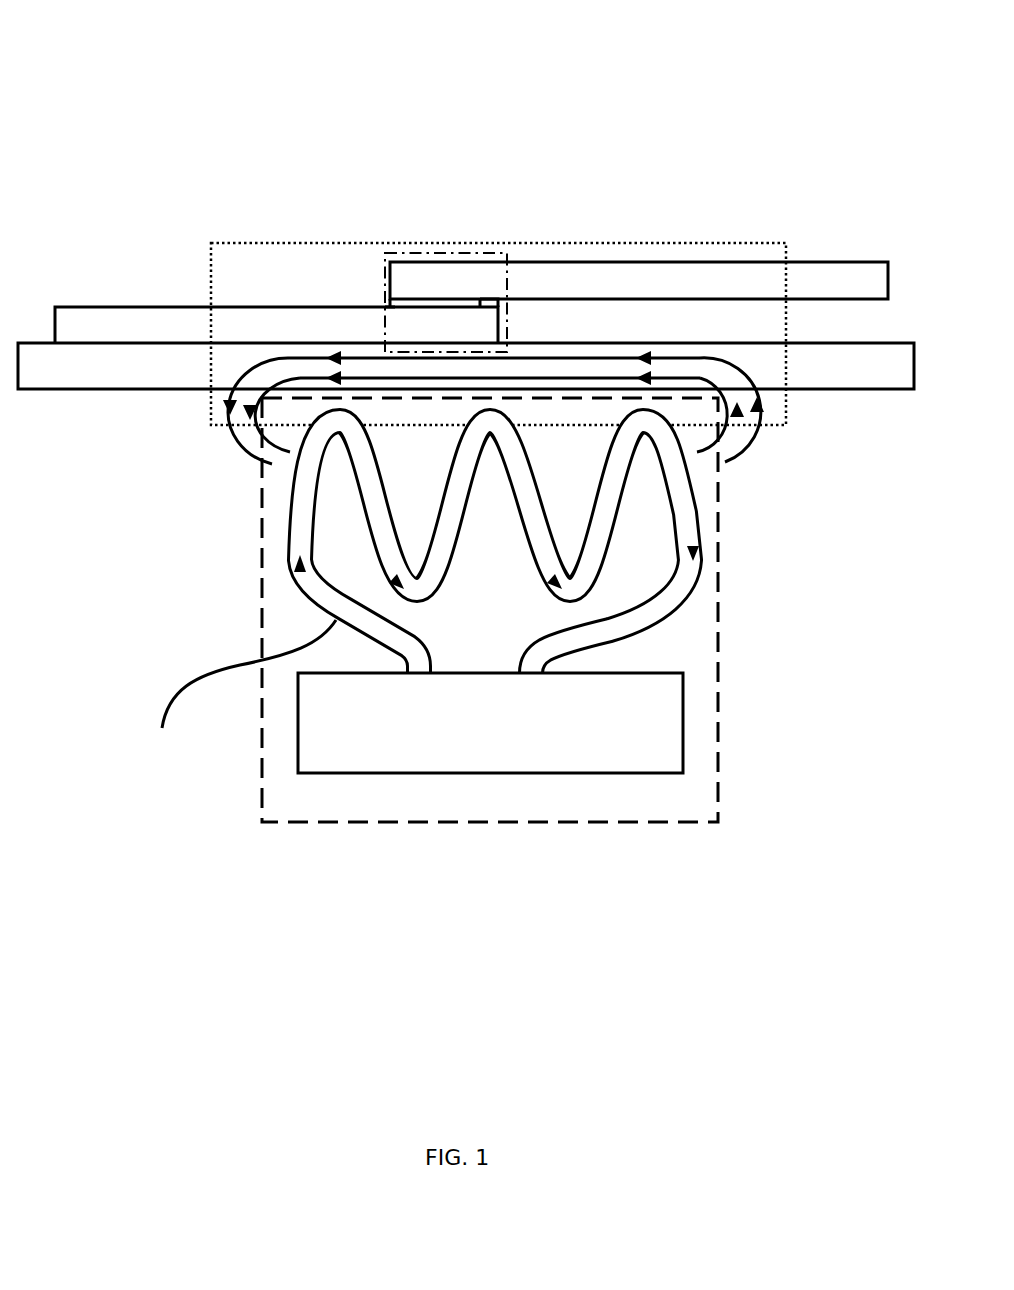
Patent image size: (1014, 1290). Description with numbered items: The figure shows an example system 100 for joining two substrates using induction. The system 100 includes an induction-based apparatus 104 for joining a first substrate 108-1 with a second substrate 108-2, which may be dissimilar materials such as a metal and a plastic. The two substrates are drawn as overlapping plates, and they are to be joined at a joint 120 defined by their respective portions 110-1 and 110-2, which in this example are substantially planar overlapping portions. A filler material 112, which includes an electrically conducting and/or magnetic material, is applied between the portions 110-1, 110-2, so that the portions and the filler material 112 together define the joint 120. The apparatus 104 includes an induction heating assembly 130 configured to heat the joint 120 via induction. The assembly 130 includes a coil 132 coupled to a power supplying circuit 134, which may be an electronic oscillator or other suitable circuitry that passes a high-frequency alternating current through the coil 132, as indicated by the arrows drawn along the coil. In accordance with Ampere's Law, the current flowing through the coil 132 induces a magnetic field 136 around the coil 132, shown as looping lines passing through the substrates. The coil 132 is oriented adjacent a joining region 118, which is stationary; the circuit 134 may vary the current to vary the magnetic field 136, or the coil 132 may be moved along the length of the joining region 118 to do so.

The system 100 is at (213, 96).
The induction-based apparatus 104 is at (160, 611).
The first substrate 108-1 is at (83, 307).
The second substrate 108-2 is at (794, 262).
The portion 110-1 is at (480, 303).
The portion 110-2 is at (450, 294).
The filler material 112 is at (391, 304).
The joining region 118 is at (684, 230).
The joint 120 is at (412, 236).
The induction heating assembly 130 is at (247, 508).
The coil 132 is at (237, 691).
The power supplying circuit 134 is at (490, 723).
The magnetic field 136 is at (768, 446).